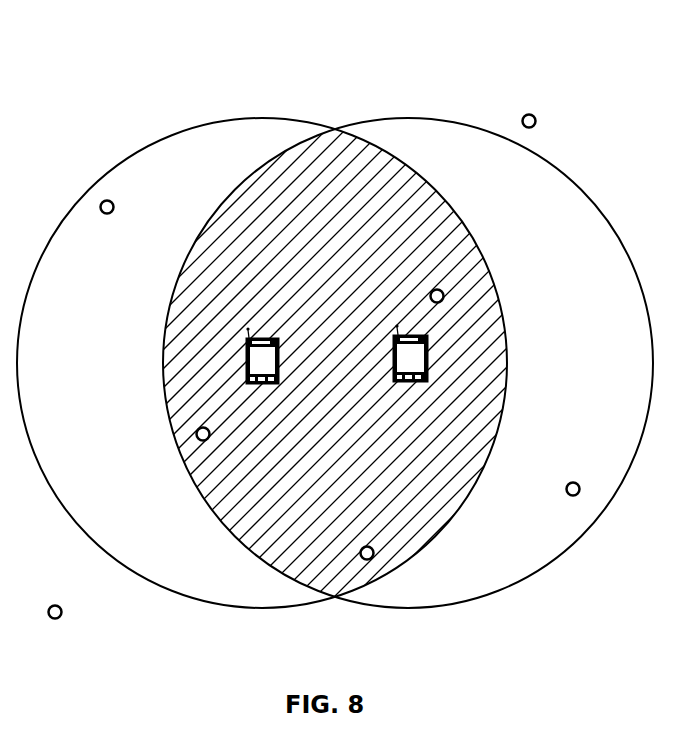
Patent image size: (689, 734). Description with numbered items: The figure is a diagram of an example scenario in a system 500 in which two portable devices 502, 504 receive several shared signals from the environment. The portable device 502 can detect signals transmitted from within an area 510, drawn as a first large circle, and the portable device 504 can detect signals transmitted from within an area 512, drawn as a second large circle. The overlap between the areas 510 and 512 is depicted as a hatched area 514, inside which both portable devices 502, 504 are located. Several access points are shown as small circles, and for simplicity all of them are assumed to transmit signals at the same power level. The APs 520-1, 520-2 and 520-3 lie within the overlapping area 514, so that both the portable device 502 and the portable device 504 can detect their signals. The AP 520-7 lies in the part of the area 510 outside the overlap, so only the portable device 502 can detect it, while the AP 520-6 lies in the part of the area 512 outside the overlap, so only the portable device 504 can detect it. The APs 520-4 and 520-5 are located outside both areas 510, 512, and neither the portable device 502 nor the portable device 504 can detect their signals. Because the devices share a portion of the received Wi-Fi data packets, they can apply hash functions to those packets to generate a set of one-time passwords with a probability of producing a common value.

The system 500 is at (344, 314).
The portable device 502 is at (255, 337).
The portable device 504 is at (419, 382).
The area 510 is at (201, 153).
The area 512 is at (584, 217).
The area 514 is at (330, 146).
The AP 520-1 is at (196, 436).
The AP 520-2 is at (434, 289).
The AP 520-3 is at (369, 560).
The AP 520-4 is at (535, 126).
The AP 520-5 is at (49, 616).
The AP 520-6 is at (567, 494).
The AP 520-7 is at (108, 214).